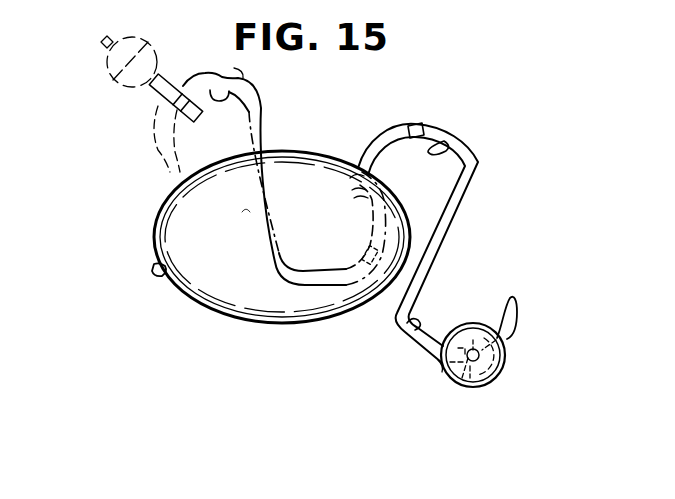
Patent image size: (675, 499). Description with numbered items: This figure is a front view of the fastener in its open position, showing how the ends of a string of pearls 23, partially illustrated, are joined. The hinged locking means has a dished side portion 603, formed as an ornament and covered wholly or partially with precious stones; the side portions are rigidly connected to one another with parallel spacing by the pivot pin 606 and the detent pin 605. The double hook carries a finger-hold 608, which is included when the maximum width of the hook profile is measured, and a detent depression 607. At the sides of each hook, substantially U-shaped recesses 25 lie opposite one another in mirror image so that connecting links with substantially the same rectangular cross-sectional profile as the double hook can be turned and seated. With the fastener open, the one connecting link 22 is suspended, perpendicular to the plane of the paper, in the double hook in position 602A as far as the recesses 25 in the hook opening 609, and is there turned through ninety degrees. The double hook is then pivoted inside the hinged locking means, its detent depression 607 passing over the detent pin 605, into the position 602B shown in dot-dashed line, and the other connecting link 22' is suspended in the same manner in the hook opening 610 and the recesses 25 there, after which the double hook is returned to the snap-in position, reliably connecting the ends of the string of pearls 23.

The dished side portion 603 is at (226, 290).
The detent pin 605 is at (153, 268).
The double hook position 602B is at (243, 78).
The double hook position 602A is at (478, 146).
The hook opening 610 is at (238, 80).
The U-shaped recess 25 is at (182, 97).
The connecting link 22' is at (133, 93).
The pivot pin 606 is at (356, 183).
The hook opening 609 is at (440, 149).
The string of pearls 23 is at (495, 378).
The connecting link 22 is at (473, 314).
The detent depression 607 is at (516, 340).
The finger-hold 608 is at (440, 364).